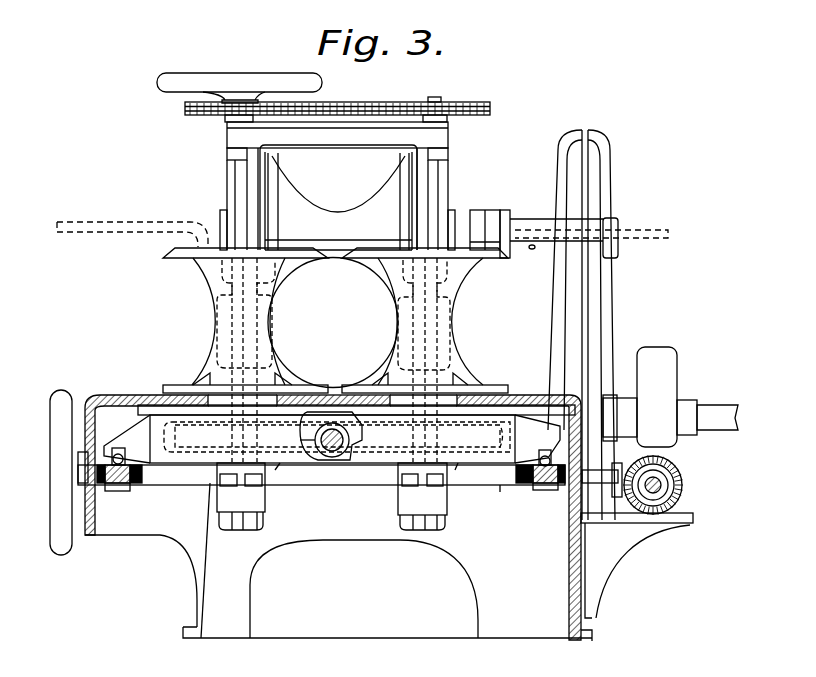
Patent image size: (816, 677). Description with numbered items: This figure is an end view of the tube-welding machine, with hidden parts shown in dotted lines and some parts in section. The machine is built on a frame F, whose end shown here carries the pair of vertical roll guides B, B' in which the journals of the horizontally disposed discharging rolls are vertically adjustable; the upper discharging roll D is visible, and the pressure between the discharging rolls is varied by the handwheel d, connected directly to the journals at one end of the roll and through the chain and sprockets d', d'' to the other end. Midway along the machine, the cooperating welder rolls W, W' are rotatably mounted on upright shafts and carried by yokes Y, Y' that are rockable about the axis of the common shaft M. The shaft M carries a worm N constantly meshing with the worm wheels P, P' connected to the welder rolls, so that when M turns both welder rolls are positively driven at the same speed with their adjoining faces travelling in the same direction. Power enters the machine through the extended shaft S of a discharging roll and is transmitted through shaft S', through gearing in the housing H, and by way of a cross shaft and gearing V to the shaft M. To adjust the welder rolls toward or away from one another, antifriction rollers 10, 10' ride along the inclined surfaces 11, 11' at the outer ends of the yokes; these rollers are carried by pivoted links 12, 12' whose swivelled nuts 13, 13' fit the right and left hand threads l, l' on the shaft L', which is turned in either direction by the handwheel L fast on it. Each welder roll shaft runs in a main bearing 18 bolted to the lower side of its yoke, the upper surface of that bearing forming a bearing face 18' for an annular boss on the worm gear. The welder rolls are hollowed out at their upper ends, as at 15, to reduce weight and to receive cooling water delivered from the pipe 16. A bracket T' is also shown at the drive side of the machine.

The handwheel d is at (239, 74).
The chain and sprocket d' is at (334, 120).
The chain and sprocket d'' is at (453, 91).
The vertical roll guide B is at (218, 199).
The vertical roll guide B' is at (452, 199).
The discharging roll D is at (322, 213).
The pipe 16 is at (110, 223).
The welder roll W is at (245, 355).
The welder roll W' is at (425, 355).
The hollow upper end 15 is at (405, 270).
The housing H is at (608, 300).
The right hand thread l is at (318, 453).
The left hand thread l' is at (515, 506).
The antifriction roller 10 is at (125, 446).
The antifriction roller 10' is at (537, 448).
The handwheel L is at (54, 472).
The shaft L' is at (312, 473).
The pivoted link 12 is at (114, 490).
The pivoted link 12' is at (582, 507).
The inclined surface 11 is at (131, 487).
The inclined surface 11' is at (540, 491).
The swivelled nut 13 is at (130, 507).
The swivelled nut 13' is at (548, 519).
The worm wheel P is at (339, 457).
The worm wheel P' is at (485, 479).
The yoke Y is at (281, 485).
The yoke Y' is at (461, 491).
The common shaft M is at (336, 458).
The worm N is at (346, 456).
The main bearing 18 is at (241, 500).
The bearing face 18' is at (402, 500).
The arm T' is at (603, 469).
The extended shaft S is at (670, 401).
The shaft S' is at (666, 485).
The gearing V is at (640, 530).
The frame F is at (255, 577).